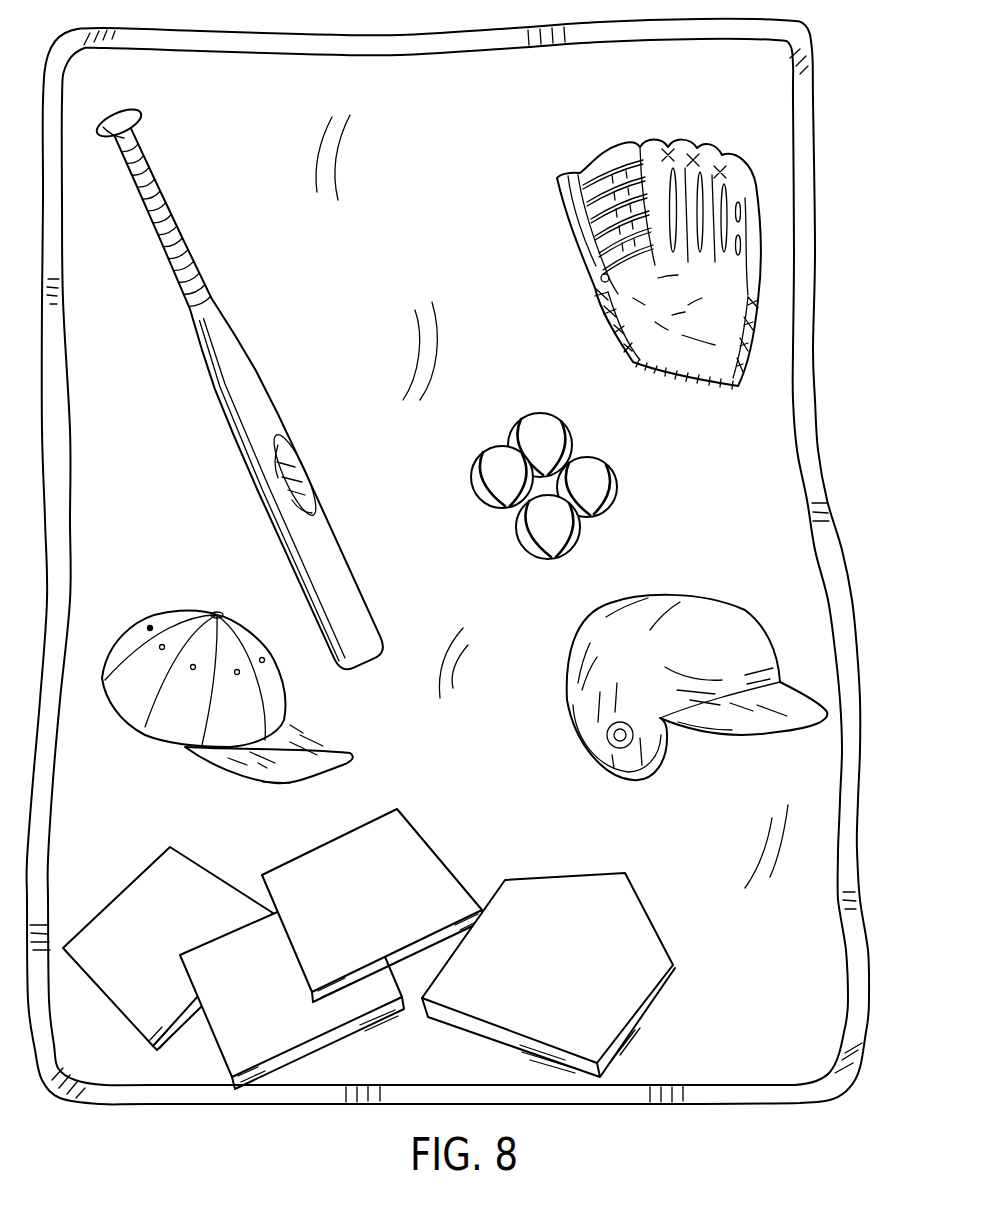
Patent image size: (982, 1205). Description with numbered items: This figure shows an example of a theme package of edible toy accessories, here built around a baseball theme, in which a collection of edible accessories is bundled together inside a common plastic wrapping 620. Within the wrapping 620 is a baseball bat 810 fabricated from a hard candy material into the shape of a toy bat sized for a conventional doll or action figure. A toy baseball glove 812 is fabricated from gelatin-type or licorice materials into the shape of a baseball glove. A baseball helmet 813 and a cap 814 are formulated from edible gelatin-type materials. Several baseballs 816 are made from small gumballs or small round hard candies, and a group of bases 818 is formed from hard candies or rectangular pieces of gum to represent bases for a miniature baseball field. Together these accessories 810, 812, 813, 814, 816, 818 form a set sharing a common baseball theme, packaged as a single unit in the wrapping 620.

The plastic wrapping 620 is at (760, 55).
The baseball bat 810 is at (163, 202).
The toy baseball glove 812 is at (598, 292).
The baseball helmet 813 is at (668, 597).
The cap 814 is at (178, 612).
The baseballs 816 is at (605, 466).
The bases 818 is at (532, 893).